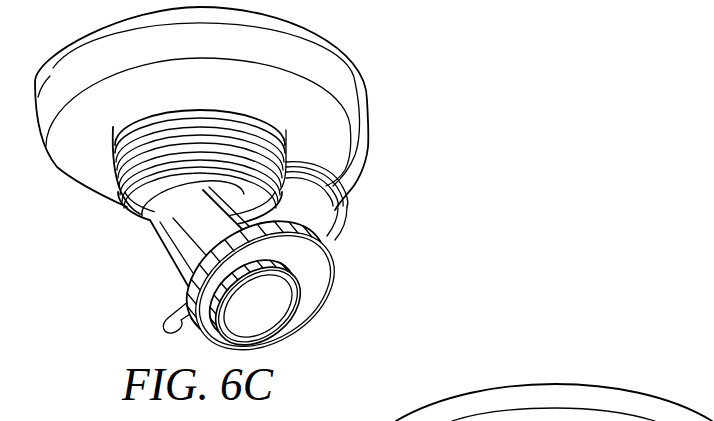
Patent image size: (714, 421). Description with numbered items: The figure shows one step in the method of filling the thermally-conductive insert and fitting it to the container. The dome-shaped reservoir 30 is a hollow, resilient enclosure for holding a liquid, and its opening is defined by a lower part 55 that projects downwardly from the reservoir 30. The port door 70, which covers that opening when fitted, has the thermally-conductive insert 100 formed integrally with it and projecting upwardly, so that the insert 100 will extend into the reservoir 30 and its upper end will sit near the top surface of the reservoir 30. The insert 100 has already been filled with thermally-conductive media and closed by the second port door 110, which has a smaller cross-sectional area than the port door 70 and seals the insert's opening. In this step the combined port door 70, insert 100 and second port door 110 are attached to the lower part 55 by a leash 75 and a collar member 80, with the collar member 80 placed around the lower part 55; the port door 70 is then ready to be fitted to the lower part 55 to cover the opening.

The reservoir 30 is at (360, 90).
The lower part 55 is at (135, 203).
The collar member 80 is at (282, 135).
The leash 75 is at (346, 206).
The port door 70 is at (321, 257).
The thermally-conductive insert 100 is at (183, 246).
The second port door 110 is at (277, 307).